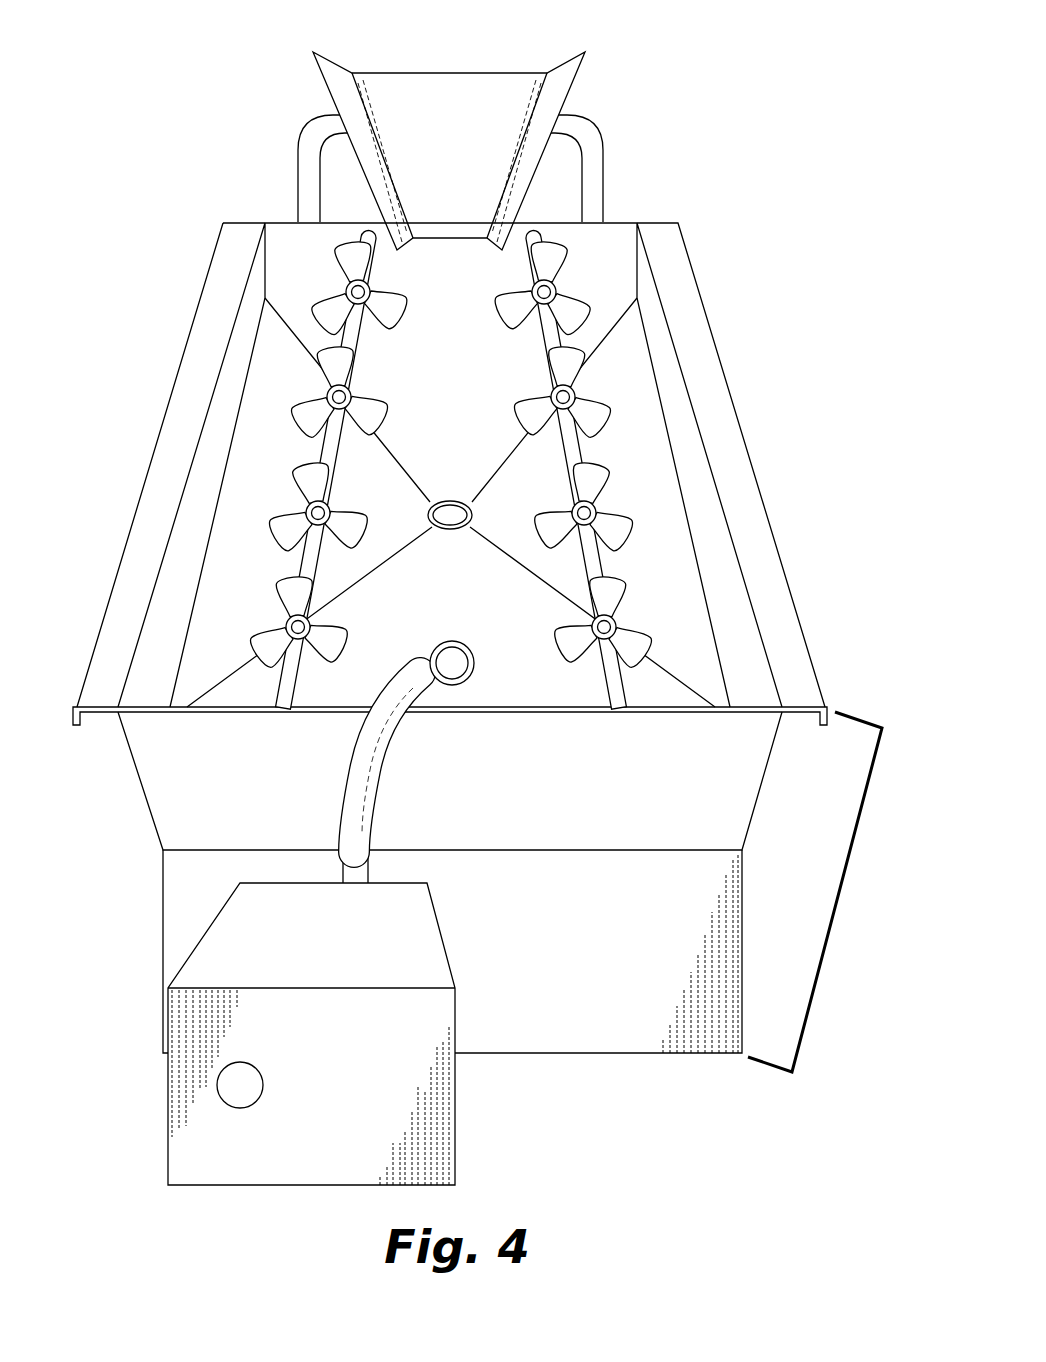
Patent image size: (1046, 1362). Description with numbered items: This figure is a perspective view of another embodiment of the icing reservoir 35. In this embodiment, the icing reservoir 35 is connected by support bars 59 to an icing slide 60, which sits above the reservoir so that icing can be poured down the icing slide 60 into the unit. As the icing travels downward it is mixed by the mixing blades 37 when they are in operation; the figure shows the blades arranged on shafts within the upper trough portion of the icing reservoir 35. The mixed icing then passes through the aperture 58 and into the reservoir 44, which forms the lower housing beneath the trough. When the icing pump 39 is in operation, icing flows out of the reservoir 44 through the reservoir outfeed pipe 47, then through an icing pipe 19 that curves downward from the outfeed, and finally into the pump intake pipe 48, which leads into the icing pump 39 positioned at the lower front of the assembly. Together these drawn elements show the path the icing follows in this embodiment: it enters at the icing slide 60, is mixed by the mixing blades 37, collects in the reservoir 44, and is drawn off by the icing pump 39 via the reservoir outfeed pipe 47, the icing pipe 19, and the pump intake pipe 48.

The icing slide 60 is at (498, 92).
The support bars 59 is at (605, 167).
The mixing blades 37 is at (563, 255).
The aperture 58 is at (480, 497).
The reservoir outfeed pipe 47 is at (445, 668).
The reservoir 44 is at (620, 750).
The icing reservoir 35 is at (830, 930).
The icing pipe 19 is at (340, 793).
The pump intake pipe 48 is at (343, 865).
The icing pump 39 is at (215, 958).